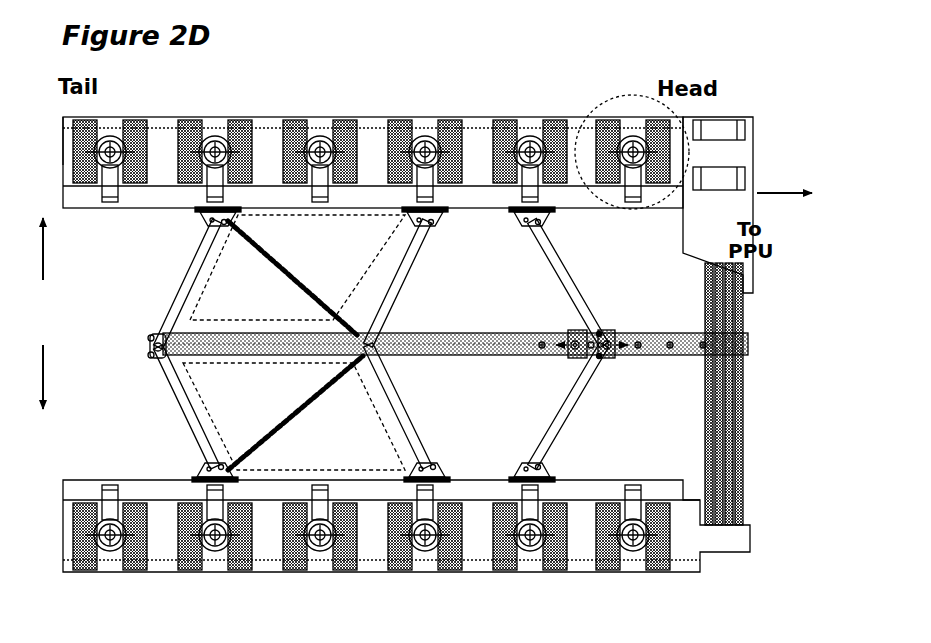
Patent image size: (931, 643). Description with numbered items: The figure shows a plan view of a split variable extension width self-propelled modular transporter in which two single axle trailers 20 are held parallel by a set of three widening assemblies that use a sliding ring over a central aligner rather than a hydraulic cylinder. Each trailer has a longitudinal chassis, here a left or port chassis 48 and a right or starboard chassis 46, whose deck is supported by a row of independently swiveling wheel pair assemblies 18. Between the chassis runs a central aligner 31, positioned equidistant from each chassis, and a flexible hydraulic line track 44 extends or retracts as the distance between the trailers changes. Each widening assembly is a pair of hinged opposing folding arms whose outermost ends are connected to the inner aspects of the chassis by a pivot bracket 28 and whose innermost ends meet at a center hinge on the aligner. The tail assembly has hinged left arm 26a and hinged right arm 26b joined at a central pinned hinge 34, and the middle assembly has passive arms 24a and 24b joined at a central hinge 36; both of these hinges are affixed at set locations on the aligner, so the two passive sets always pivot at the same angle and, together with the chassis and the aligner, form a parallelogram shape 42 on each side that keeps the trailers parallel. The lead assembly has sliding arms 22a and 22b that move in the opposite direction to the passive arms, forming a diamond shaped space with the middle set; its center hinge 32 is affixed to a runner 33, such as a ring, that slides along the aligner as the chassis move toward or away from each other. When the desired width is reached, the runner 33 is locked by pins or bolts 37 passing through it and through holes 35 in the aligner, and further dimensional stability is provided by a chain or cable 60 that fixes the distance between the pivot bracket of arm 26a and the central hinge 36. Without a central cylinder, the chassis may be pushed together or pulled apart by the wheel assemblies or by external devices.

The wheel pair assembly 18 is at (597, 97).
The single axle trailer 20 is at (260, 99).
The left or port chassis 48 is at (378, 117).
The right or starboard chassis 46 is at (168, 484).
The flexible hydraulic line track 44 is at (730, 527).
The pivot bracket 28 is at (242, 227).
The chain or cable 60 is at (303, 282).
The hinged left arm 26a is at (170, 298).
The hinged right arm 26b is at (195, 442).
The passive arm 24a is at (394, 300).
The passive arm 24b is at (420, 442).
The sliding arm 22a is at (605, 250).
The sliding arm 22b is at (579, 403).
The central hinge 36 is at (392, 360).
The central aligner 31 is at (457, 333).
The central pinned hinge 34 is at (150, 340).
The parallelogram shape 42 is at (160, 352).
The pins or bolts 37 is at (567, 328).
The runner 33 is at (607, 328).
The center hinge 32 is at (610, 360).
The holes 35 is at (543, 357).